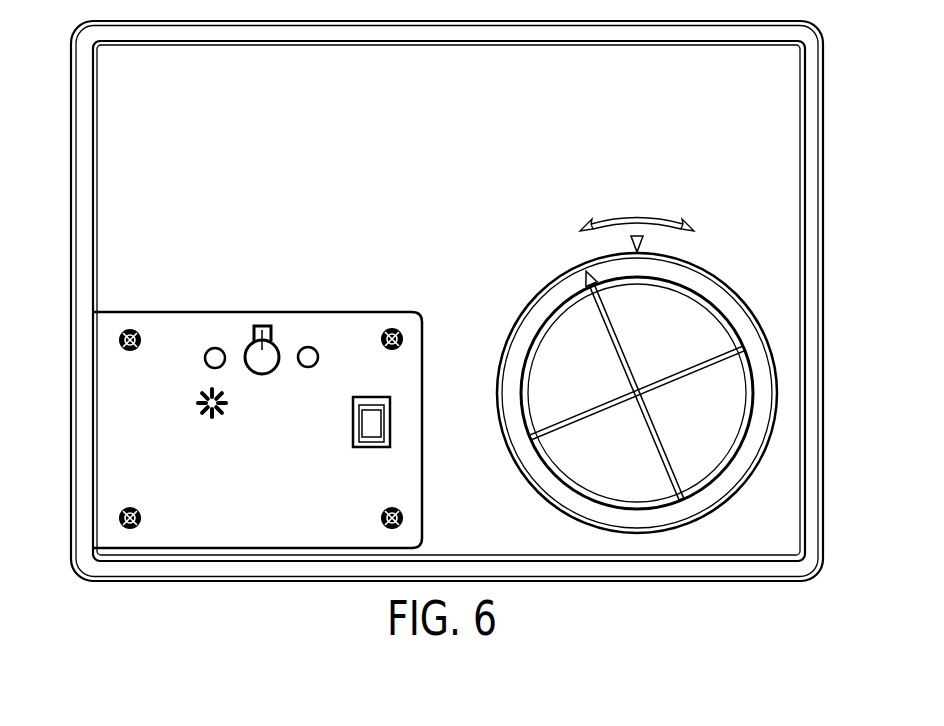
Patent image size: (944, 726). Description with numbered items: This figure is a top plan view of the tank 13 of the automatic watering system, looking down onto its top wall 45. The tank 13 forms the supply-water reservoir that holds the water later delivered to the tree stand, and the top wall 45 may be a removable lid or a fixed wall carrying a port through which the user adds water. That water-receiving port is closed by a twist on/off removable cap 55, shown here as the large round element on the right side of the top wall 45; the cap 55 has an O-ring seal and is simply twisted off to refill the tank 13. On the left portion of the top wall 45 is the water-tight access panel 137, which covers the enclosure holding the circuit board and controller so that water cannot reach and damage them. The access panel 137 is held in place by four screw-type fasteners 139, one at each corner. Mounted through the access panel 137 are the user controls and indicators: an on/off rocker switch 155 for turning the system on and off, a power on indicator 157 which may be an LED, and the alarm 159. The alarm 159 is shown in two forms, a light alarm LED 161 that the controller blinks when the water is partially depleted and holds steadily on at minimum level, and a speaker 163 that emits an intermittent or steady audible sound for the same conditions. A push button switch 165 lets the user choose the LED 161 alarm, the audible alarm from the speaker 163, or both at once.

The tank 13 is at (70, 168).
The top wall 45 is at (141, 82).
The twist on/off removable cap 55 is at (718, 411).
The access panel 137 is at (140, 459).
The screw-type fasteners 139 is at (399, 330).
The on/off rocker switch 155 is at (373, 424).
The power on indicator 157 is at (300, 349).
The alarm 159 is at (200, 358).
The light alarm LED 161 is at (206, 349).
The speaker 163 is at (223, 413).
The push button switch 165 is at (257, 326).